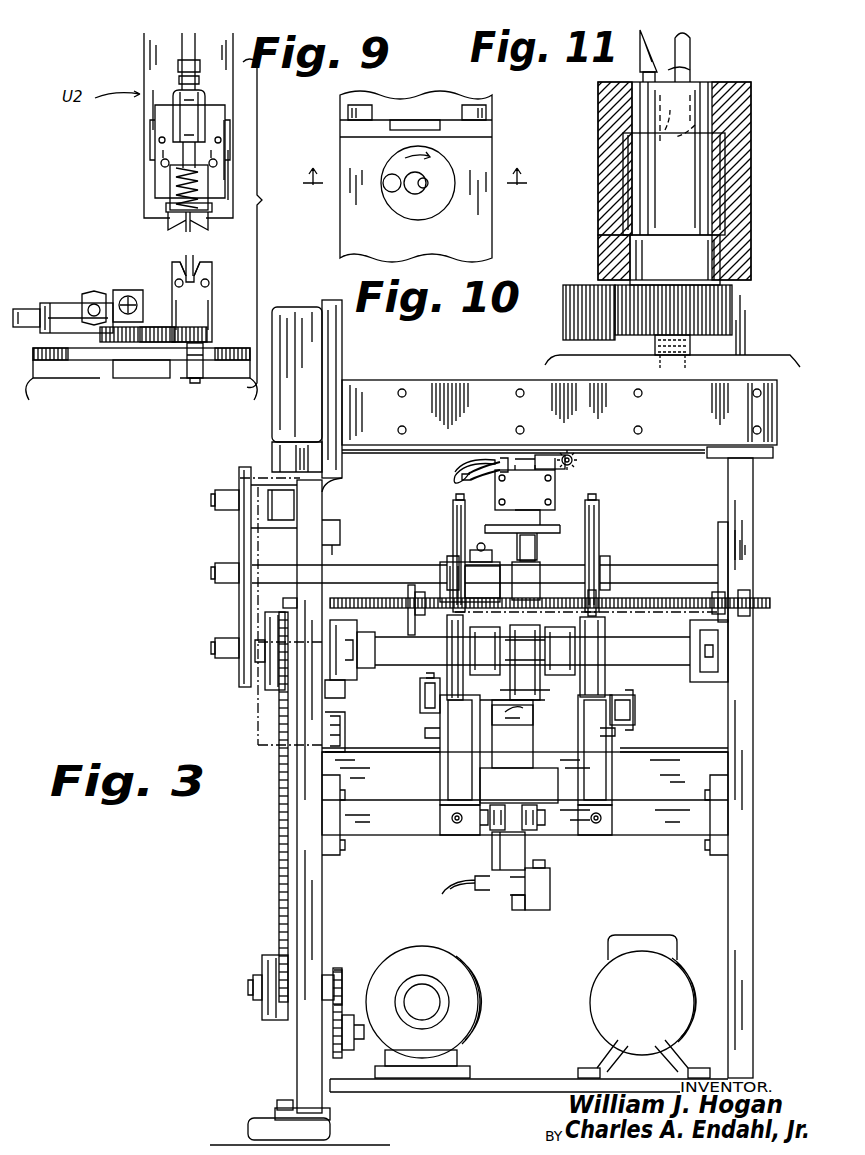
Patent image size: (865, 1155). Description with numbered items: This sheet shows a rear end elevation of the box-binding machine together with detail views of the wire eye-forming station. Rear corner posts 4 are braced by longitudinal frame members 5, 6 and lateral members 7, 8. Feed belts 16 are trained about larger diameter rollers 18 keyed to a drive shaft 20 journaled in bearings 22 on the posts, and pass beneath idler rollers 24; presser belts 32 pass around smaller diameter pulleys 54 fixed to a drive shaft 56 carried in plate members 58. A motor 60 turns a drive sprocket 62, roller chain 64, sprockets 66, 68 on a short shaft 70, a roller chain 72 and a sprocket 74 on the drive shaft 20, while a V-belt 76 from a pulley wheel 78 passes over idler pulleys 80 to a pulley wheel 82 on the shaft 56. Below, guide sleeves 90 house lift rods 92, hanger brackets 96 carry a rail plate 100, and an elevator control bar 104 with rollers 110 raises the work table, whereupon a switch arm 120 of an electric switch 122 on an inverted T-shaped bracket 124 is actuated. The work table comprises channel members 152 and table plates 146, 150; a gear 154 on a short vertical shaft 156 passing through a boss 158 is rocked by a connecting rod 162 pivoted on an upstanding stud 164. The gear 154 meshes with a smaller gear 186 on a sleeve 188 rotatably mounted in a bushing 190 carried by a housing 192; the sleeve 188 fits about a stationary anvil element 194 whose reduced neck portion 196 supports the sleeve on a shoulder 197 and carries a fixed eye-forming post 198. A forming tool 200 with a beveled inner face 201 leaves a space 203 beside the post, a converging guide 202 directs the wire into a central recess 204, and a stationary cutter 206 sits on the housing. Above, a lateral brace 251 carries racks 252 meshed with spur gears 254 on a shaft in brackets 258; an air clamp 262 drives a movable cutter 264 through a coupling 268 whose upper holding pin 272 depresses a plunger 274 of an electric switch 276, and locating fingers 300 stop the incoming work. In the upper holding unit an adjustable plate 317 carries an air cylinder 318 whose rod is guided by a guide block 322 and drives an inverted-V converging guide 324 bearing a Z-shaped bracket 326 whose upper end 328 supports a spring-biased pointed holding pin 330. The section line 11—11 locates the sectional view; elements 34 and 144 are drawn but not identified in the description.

In FIG. 3, the corner posts 4 is at (318, 908).
In FIG. 3, the longitudinal frame member 5 is at (324, 1092).
In FIG. 3, the longitudinal frame member 6 is at (320, 750).
In FIG. 3, the lateral member 7 is at (360, 750).
In FIG. 3, the lateral member 8 is at (378, 835).
In FIG. 10, the section line 11 is at (414, 167).
In FIG. 3, the feed belts 16 is at (454, 656).
In FIG. 3, the larger diameter rollers 18 is at (442, 638).
In FIG. 3, the drive shaft 20 is at (375, 664).
In FIG. 3, the bearings 22 is at (345, 678).
In FIG. 3, the idler rollers 24 is at (442, 732).
In FIG. 3, the presser belts 32 is at (454, 506).
In FIG. 3, the plate cap 34 is at (453, 523).
In FIG. 3, the smaller diameter pulleys 54 is at (452, 583).
In FIG. 3, the drive shaft 56 is at (372, 570).
In FIG. 3, the plate members 58 is at (332, 530).
In FIG. 3, the motor 60 is at (420, 954).
In FIG. 3, the drive sprocket 62 is at (350, 1046).
In FIG. 3, the roller chain 64 is at (335, 1028).
In FIG. 3, the sprocket 66 is at (332, 975).
In FIG. 3, the sprocket 68 is at (272, 1002).
In FIG. 3, the short shaft 70 is at (253, 982).
In FIG. 3, the roller chain 72 is at (279, 834).
In FIG. 3, the sprocket 74 is at (275, 681).
In FIG. 3, the V-belt 76 is at (245, 533).
In FIG. 3, the pulley wheel 78 is at (233, 653).
In FIG. 3, the idler pulleys 80 is at (238, 497).
In FIG. 3, the pulley wheel 82 is at (233, 577).
In FIG. 3, the guide sleeves 90 is at (512, 734).
In FIG. 3, the lift rods 92 is at (520, 718).
In FIG. 3, the hanger brackets 96 is at (477, 804).
In FIG. 3, the rail plate 100 is at (513, 848).
In FIG. 3, the elevator control bar 104 is at (509, 804).
In FIG. 3, the rollers 110 is at (490, 830).
In FIG. 3, the switch arm 120 is at (518, 910).
In FIG. 3, the electric switch 122 is at (550, 893).
In FIG. 3, the inverted T-shaped bracket 124 is at (545, 868).
In FIG. 3, the slide 144 is at (508, 722).
In FIG. 9, the table plate 146 is at (82, 362).
In FIG. 11, the table plate 146 is at (560, 355).
In FIG. 3, the table plate 150 is at (578, 670).
In FIG. 9, the channel members 152 is at (139, 397).
In FIG. 3, the channel members 152 is at (420, 692).
In FIG. 9, the gear 154 is at (147, 343).
In FIG. 11, the gear 154 is at (581, 285).
In FIG. 9, the short vertical shaft 156 is at (150, 290).
In FIG. 9, the boss 158 is at (120, 376).
In FIG. 9, the connecting rod 162 is at (102, 294).
In FIG. 9, the upstanding stud 164 is at (112, 304).
In FIG. 9, the gear 186 is at (207, 330).
In FIG. 11, the gear 186 is at (732, 308).
In FIG. 10, the sleeve 188 is at (406, 208).
In FIG. 11, the sleeve 188 is at (638, 152).
In FIG. 11, the bushing 190 is at (628, 176).
In FIG. 9, the housing 192 is at (212, 296).
In FIG. 10, the housing 192 is at (488, 205).
In FIG. 11, the housing 192 is at (605, 116).
In FIG. 3, the housing 192 is at (518, 682).
In FIG. 9, the anvil element 194 is at (202, 362).
In FIG. 11, the anvil element 194 is at (691, 210).
In FIG. 10, the reduced neck portion 196 is at (417, 190).
In FIG. 11, the reduced neck portion 196 is at (687, 137).
In FIG. 11, the reduced diameter shoulder 197 is at (698, 126).
In FIG. 9, the fixed eye-forming post 198 is at (195, 262).
In FIG. 10, the fixed eye-forming post 198 is at (424, 181).
In FIG. 11, the fixed eye-forming post 198 is at (690, 50).
In FIG. 9, the forming tool 200 is at (185, 264).
In FIG. 10, the forming tool 200 is at (388, 181).
In FIG. 11, the forming tool 200 is at (640, 76).
In FIG. 11, the inner face 201 is at (640, 60).
In FIG. 9, the converging guide 202 is at (202, 276).
In FIG. 11, the space 203 is at (690, 70).
In FIG. 9, the central recess 204 is at (180, 270).
In FIG. 10, the stationary cutter 206 is at (406, 122).
In FIG. 3, the lateral brace 251 is at (470, 394).
In FIG. 3, the racks 252 is at (670, 458).
In FIG. 3, the spur gears 254 is at (578, 460).
In FIG. 3, the brackets 258 is at (550, 459).
In FIG. 3, the air clamp 262 is at (545, 505).
In FIG. 3, the movable cutter 264 is at (538, 548).
In FIG. 3, the coupling 268 is at (553, 527).
In FIG. 3, the upper holding pin 272 is at (496, 539).
In FIG. 3, the plunger 274 is at (470, 552).
In FIG. 3, the electric switch 276 is at (470, 570).
In FIG. 3, the locating fingers 300 is at (425, 608).
In FIG. 9, the adjustable plate 317 is at (158, 136).
In FIG. 9, the air cylinder 318 is at (173, 96).
In FIG. 9, the guide block 322 is at (170, 190).
In FIG. 9, the converging guide 324 is at (166, 206).
In FIG. 9, the Z-shaped bracket 326 is at (171, 180).
In FIG. 9, the upper end 328 is at (161, 161).
In FIG. 9, the spring-biased pointed holding pin 330 is at (182, 222).